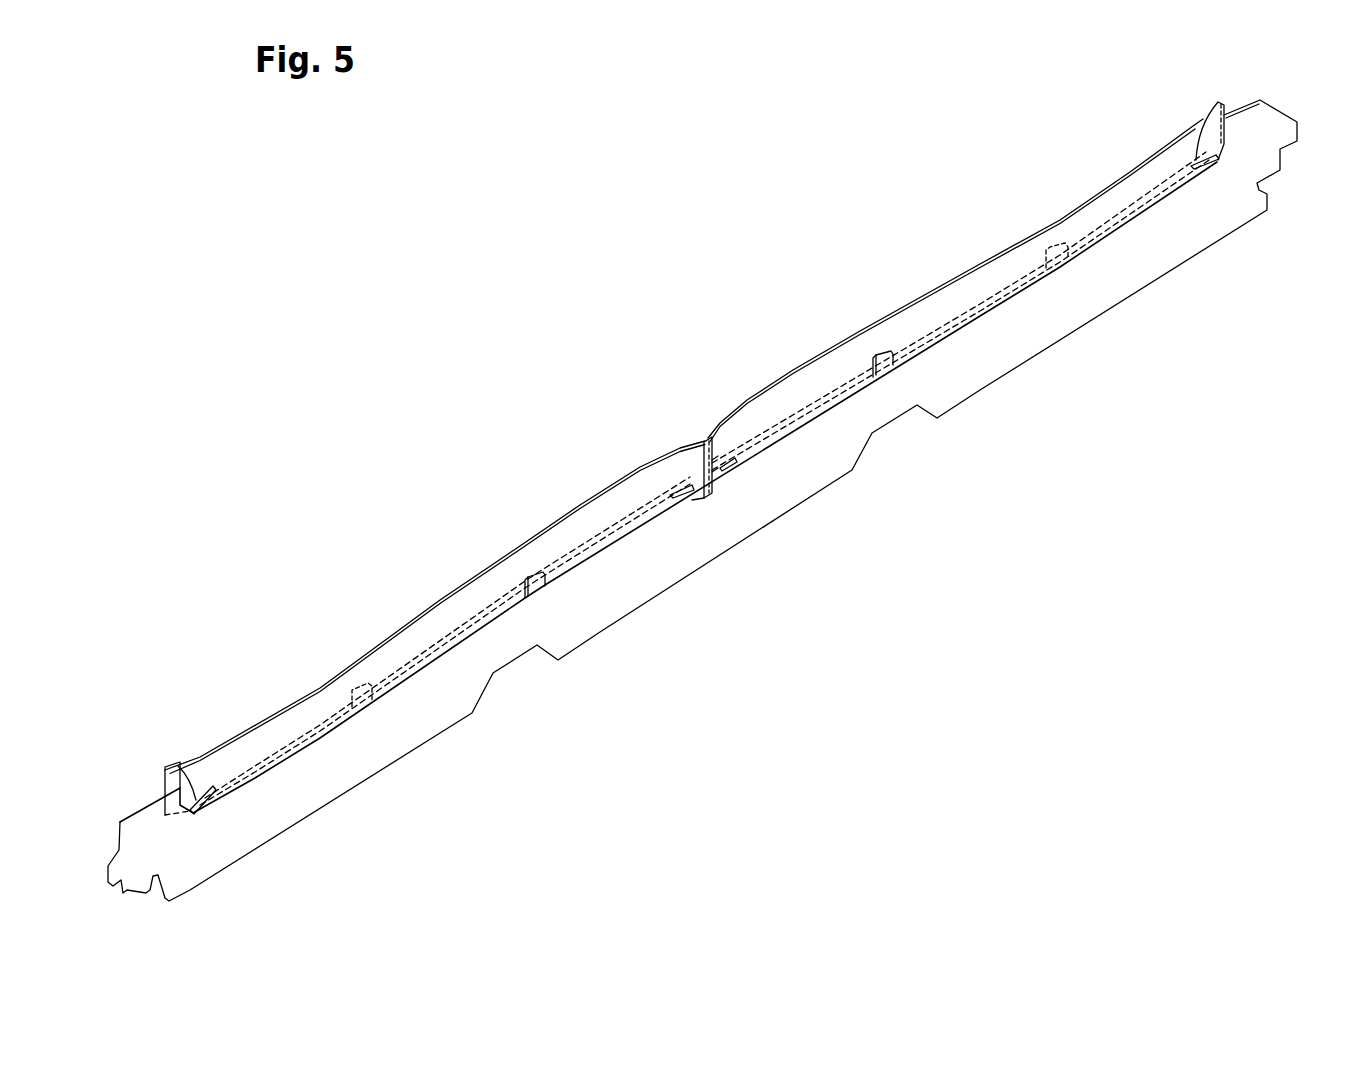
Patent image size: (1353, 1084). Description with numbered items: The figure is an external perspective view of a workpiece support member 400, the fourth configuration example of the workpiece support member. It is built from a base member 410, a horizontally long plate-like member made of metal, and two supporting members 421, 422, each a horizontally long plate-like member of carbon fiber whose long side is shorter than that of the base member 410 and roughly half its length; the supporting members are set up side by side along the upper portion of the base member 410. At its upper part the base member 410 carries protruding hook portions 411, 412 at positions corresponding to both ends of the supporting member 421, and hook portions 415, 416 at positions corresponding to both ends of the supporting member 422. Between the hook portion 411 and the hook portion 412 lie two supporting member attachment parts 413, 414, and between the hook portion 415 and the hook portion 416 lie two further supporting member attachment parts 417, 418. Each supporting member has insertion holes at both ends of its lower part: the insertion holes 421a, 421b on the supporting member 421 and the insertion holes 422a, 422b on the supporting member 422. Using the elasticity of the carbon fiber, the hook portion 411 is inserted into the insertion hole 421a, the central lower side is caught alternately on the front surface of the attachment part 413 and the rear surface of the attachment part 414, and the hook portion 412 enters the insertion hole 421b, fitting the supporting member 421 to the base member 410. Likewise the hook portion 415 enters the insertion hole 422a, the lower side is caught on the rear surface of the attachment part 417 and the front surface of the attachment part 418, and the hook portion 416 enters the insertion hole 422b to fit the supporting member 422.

The workpiece support member 400 is at (684, 352).
The base member 410 is at (227, 852).
The hook portion 411 is at (177, 766).
The hook portion 412 is at (680, 484).
The supporting member attachment part 413 is at (362, 685).
The supporting member attachment part 414 is at (536, 574).
The hook portion 415 is at (730, 453).
The hook portion 416 is at (1219, 103).
The supporting member attachment part 417 is at (887, 353).
The supporting member attachment part 418 is at (1060, 247).
The supporting member 421 is at (412, 647).
The insertion hole 421a is at (201, 787).
The insertion hole 421b is at (674, 488).
The supporting member 422 is at (947, 307).
The insertion hole 422a is at (732, 456).
The insertion hole 422b is at (1200, 156).